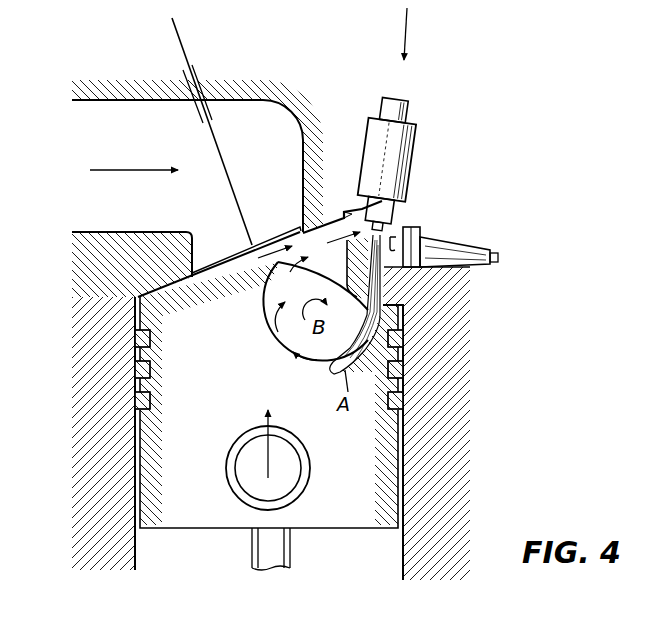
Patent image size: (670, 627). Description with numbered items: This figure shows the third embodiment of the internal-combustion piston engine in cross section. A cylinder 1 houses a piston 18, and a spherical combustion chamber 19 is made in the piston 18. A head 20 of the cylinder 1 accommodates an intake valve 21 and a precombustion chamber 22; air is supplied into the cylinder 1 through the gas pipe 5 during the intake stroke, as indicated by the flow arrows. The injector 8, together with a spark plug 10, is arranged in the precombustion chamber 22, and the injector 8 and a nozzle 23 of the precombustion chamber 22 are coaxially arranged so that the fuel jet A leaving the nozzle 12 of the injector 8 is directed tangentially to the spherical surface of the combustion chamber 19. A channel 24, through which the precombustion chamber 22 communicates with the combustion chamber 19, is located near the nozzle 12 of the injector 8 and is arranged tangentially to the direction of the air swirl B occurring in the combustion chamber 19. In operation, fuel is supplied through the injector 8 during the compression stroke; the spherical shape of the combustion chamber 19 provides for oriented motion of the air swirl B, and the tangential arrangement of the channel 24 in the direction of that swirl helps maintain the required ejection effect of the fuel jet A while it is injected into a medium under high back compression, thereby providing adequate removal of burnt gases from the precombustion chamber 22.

The cylinder 1 is at (407, 494).
The gas pipe 5 is at (270, 96).
The injector 8 is at (413, 145).
The spark plug 10 is at (465, 255).
The nozzle of the injector 12 is at (385, 216).
The piston 18 is at (362, 427).
The spherical combustion chamber 19 is at (404, 350).
The head of the cylinder 20 is at (318, 222).
The intake valve 21 is at (265, 245).
The precombustion chamber 22 is at (396, 232).
The nozzle of the precombustion chamber 23 is at (405, 318).
The channel 24 is at (352, 220).